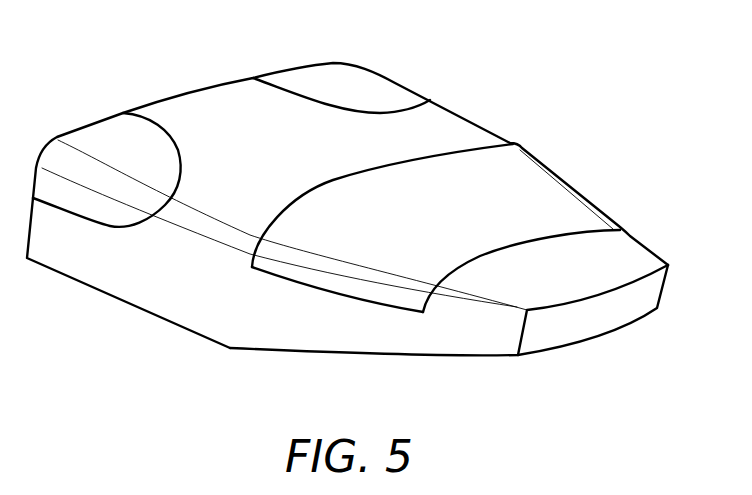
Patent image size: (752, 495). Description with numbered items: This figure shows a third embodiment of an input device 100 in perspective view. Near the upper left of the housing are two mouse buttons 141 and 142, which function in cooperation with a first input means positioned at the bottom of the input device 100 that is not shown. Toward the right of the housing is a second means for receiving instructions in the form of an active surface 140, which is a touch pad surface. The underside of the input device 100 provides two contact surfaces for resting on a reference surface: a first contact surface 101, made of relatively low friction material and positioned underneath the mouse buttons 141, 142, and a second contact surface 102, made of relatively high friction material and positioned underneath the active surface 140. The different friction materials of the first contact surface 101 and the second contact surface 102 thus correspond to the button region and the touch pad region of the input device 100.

The input device 100 is at (503, 86).
The first contact surface 101 is at (128, 303).
The second contact surface 102 is at (385, 353).
The active surface 140 is at (552, 180).
The mouse button 141 is at (98, 135).
The mouse button 142 is at (343, 73).